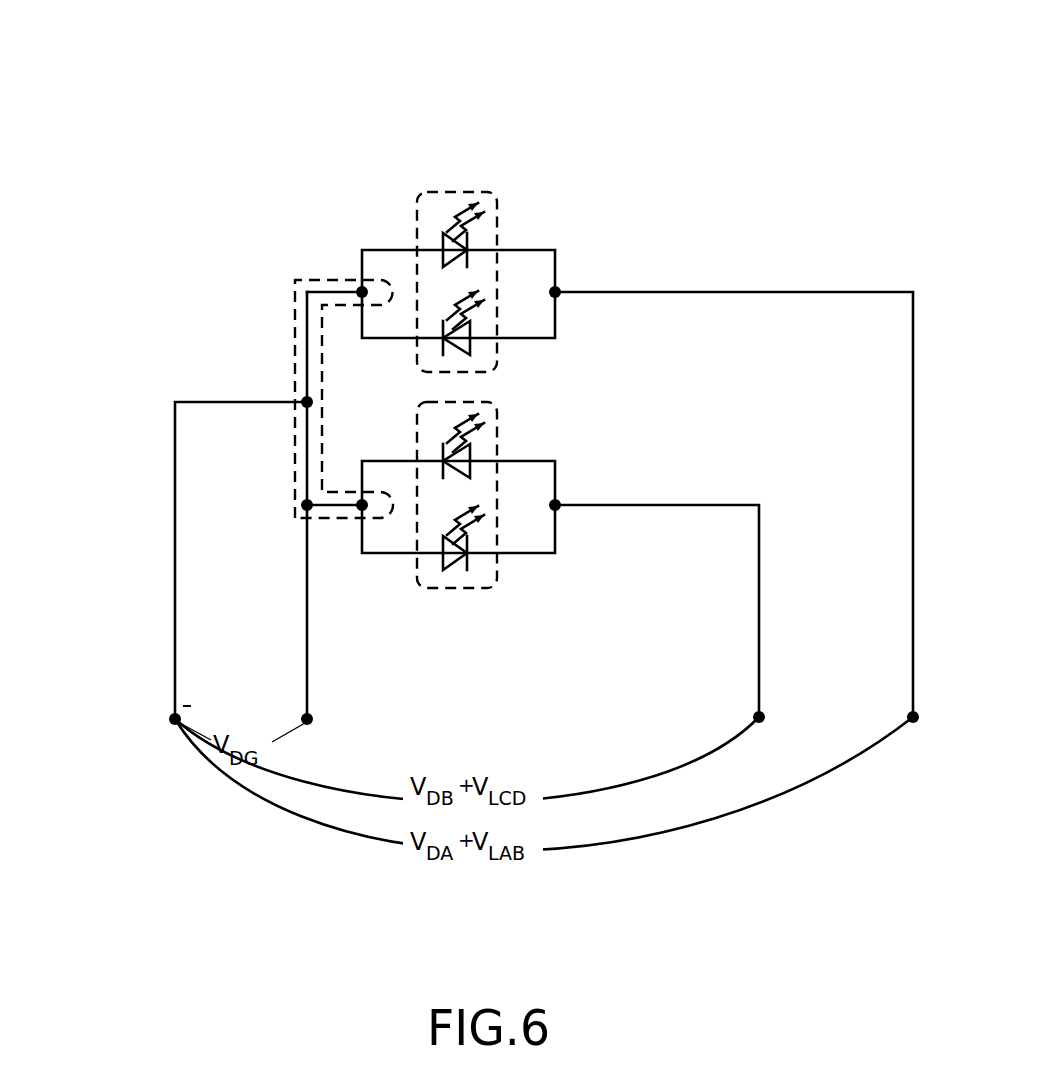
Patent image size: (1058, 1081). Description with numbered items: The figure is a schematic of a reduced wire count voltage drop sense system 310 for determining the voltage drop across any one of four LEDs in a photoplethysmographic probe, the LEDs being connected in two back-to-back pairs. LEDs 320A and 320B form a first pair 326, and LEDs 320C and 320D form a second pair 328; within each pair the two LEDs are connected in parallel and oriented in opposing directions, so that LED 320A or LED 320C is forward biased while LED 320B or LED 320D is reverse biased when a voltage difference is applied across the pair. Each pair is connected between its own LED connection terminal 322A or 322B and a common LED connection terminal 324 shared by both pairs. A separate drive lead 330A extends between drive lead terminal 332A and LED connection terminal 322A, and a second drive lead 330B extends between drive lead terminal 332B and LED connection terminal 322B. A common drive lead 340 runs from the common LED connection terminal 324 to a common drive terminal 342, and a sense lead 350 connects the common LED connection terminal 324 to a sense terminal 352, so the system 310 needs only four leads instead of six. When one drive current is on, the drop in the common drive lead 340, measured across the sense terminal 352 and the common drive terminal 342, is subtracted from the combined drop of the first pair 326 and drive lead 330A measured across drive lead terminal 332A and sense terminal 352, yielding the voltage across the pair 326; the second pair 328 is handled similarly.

The reduced wire count voltage drop sense system 310 is at (830, 122).
The LED 320A is at (450, 554).
The LED 320B is at (470, 456).
The LED 320C is at (472, 344).
The LED 320D is at (443, 237).
The LED connection terminal 322A is at (557, 503).
The LED connection terminal 322B is at (557, 290).
The common LED connection terminal 324 is at (295, 290).
The first pair 326 is at (495, 415).
The second pair 328 is at (497, 222).
The drive lead 330A is at (759, 548).
The drive lead 330B is at (913, 440).
The drive lead terminal 332A is at (759, 717).
The drive lead terminal 332B is at (913, 717).
The common drive lead 340 is at (307, 628).
The common drive terminal 342 is at (307, 719).
The sense lead 350 is at (175, 557).
The sense terminal 352 is at (175, 719).